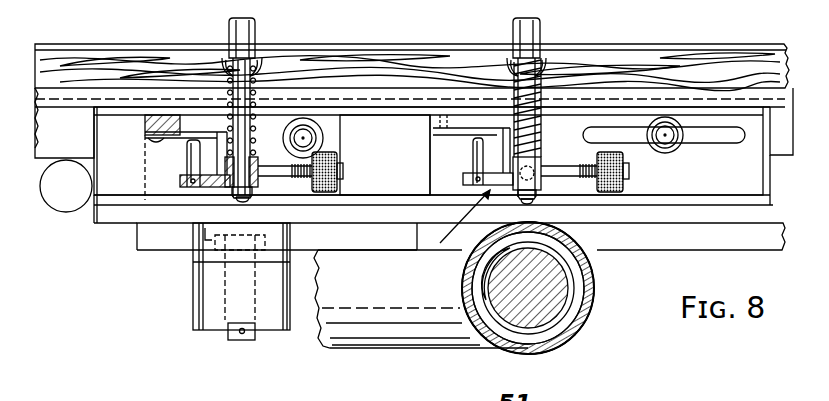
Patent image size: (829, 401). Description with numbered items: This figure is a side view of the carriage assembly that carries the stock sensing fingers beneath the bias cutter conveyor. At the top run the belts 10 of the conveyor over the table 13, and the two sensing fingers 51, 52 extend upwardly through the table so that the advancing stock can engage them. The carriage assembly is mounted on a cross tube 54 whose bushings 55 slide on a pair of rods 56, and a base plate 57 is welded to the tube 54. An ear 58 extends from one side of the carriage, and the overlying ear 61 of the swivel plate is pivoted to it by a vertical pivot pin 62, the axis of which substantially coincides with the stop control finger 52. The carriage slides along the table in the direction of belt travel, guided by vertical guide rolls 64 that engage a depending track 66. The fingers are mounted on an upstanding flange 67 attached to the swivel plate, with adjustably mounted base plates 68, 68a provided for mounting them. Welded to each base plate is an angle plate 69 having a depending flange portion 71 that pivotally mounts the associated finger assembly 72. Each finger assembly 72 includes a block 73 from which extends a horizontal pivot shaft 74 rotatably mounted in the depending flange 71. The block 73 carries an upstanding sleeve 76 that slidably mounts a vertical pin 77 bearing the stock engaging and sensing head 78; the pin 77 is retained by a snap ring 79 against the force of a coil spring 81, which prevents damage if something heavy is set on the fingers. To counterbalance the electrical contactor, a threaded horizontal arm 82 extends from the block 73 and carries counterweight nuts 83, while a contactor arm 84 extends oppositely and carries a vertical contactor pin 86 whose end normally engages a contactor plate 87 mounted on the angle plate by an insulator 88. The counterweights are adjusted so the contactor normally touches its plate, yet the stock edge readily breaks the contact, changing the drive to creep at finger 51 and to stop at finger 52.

The belts 10 is at (141, 50).
The table 13 is at (100, 58).
The finger 51 is at (547, 117).
The finger 52 is at (235, 116).
The cross tube 54 is at (585, 312).
The bushings 55 is at (565, 318).
The rods 56 is at (563, 290).
The base plate 57 is at (145, 246).
The ear 58 is at (200, 280).
The ear 61 is at (200, 240).
The vertical pivot pin 62 is at (228, 331).
The vertical guide rolls 64 is at (72, 205).
The depending track 66 is at (70, 141).
The upstanding flange 67 is at (392, 137).
The base plate 68 is at (335, 143).
The base plate 68a is at (436, 182).
The angle plate 69 is at (470, 122).
The depending flange portion 71 is at (246, 130).
The finger assemblies 72 is at (455, 225).
The block 73 is at (262, 196).
The horizontal pivot shaft 74 is at (248, 198).
The upstanding sleeve 76 is at (255, 143).
The vertical pin 77 is at (222, 63).
The stock engaging and sensing head 78 is at (241, 25).
The snap ring 79 is at (234, 199).
The coil spring 81 is at (258, 62).
The threaded horizontal arm 82 is at (343, 172).
The counterweight nuts 83 is at (606, 160).
The contactor arm 84 is at (180, 182).
The vertical contactor pin 86 is at (187, 163).
The contactor plate 87 is at (147, 143).
The insulator 88 is at (145, 131).